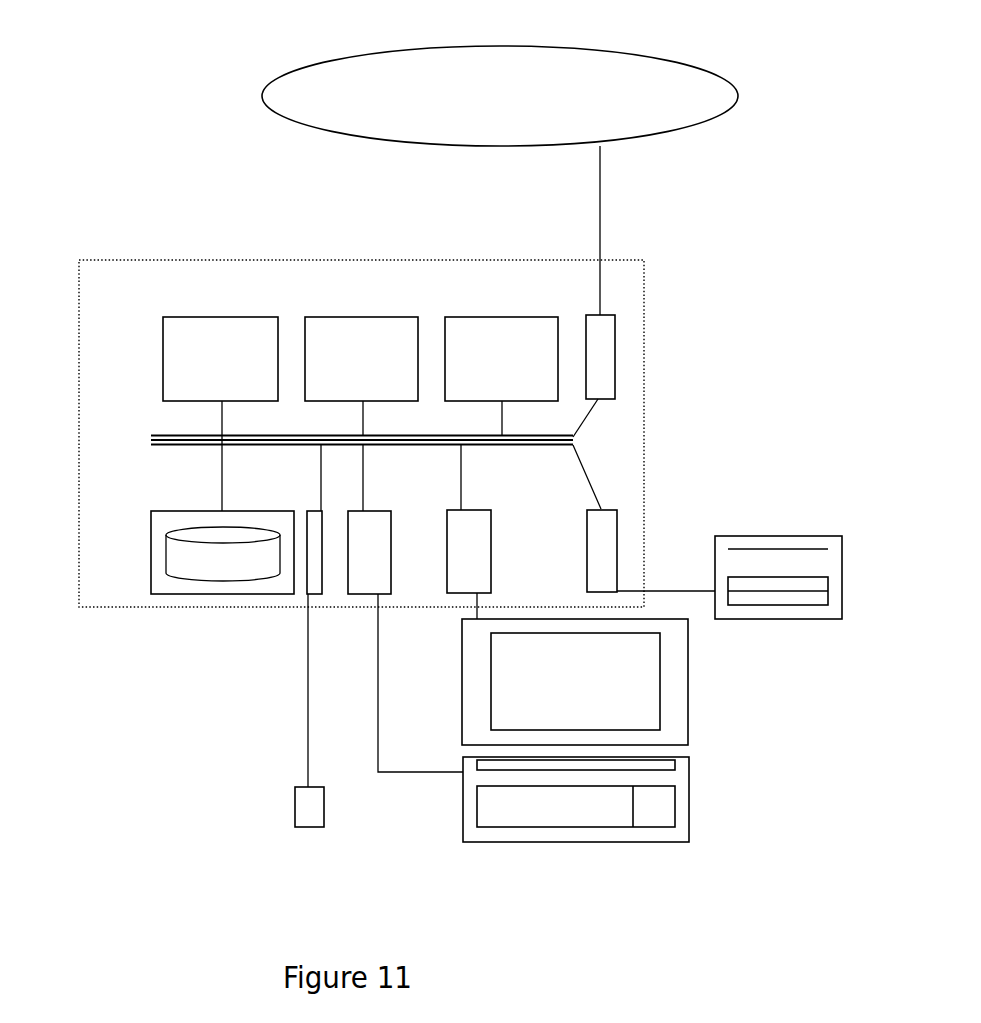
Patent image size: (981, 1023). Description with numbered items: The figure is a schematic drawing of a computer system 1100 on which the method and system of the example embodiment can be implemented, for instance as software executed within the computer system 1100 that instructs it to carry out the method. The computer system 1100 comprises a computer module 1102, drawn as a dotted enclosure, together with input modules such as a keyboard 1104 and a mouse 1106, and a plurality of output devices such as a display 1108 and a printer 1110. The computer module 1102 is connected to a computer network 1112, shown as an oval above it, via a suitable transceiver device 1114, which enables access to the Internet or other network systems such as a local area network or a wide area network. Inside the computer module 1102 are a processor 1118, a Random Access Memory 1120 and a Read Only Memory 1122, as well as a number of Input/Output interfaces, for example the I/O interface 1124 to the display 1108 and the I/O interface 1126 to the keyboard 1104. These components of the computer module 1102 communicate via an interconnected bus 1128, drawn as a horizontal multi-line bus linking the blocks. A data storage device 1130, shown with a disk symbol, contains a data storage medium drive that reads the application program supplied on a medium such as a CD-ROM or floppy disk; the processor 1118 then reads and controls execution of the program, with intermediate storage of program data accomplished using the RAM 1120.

The computer system 1100 is at (134, 889).
The computer module 1102 is at (430, 433).
The keyboard 1104 is at (576, 843).
The mouse 1106 is at (283, 756).
The display 1108 is at (644, 682).
The printer 1110 is at (778, 533).
The computer network 1112 is at (506, 164).
The transceiver device 1114 is at (662, 366).
The processor 1118 is at (501, 324).
The Random Access Memory (RAM) 1120 is at (220, 362).
The Read Only Memory (ROM) 1122 is at (361, 324).
The I/O interface 1124 is at (444, 570).
The I/O interface 1126 is at (394, 608).
The interconnected bus 1128 is at (300, 457).
The data storage device 1130 is at (209, 604).